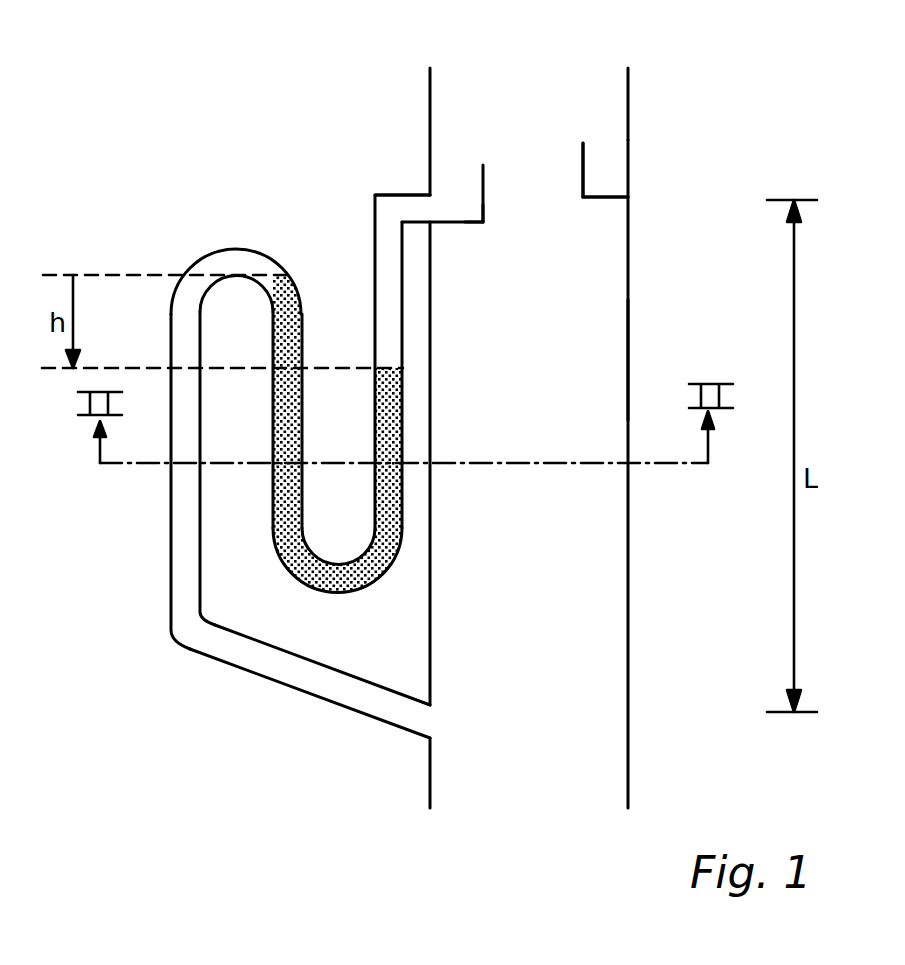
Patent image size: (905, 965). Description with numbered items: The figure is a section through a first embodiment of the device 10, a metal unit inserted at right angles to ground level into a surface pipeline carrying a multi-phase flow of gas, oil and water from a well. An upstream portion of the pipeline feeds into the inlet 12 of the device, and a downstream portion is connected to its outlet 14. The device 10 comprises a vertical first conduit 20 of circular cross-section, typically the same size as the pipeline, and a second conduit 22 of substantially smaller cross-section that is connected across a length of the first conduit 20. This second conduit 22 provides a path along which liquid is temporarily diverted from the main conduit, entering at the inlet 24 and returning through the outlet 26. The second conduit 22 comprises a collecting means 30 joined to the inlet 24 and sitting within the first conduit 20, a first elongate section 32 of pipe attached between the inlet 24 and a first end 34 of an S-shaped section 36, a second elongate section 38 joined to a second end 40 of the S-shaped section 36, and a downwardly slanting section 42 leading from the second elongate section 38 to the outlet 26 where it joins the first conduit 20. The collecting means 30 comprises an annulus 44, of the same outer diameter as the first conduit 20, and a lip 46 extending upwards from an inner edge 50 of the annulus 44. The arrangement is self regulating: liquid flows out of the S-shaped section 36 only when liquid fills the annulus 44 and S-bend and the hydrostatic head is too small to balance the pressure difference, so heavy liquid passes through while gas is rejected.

The device 10 is at (128, 543).
The inlet 12 is at (532, 96).
The outlet 14 is at (538, 778).
The first conduit 20 is at (628, 322).
The second conduit 22 is at (375, 195).
The inlet 24 is at (458, 192).
The outlet 26 is at (430, 720).
The collecting means 30 is at (615, 190).
The first elongate section 32 is at (403, 192).
The first end 34 is at (375, 537).
The S-shaped section 36 is at (290, 323).
The second elongate section 38 is at (170, 543).
The second end 40 is at (170, 308).
The downwardly slanting section 42 is at (250, 673).
The annulus 44 is at (450, 223).
The lip 46 is at (486, 193).
The inner edge 50 is at (483, 224).